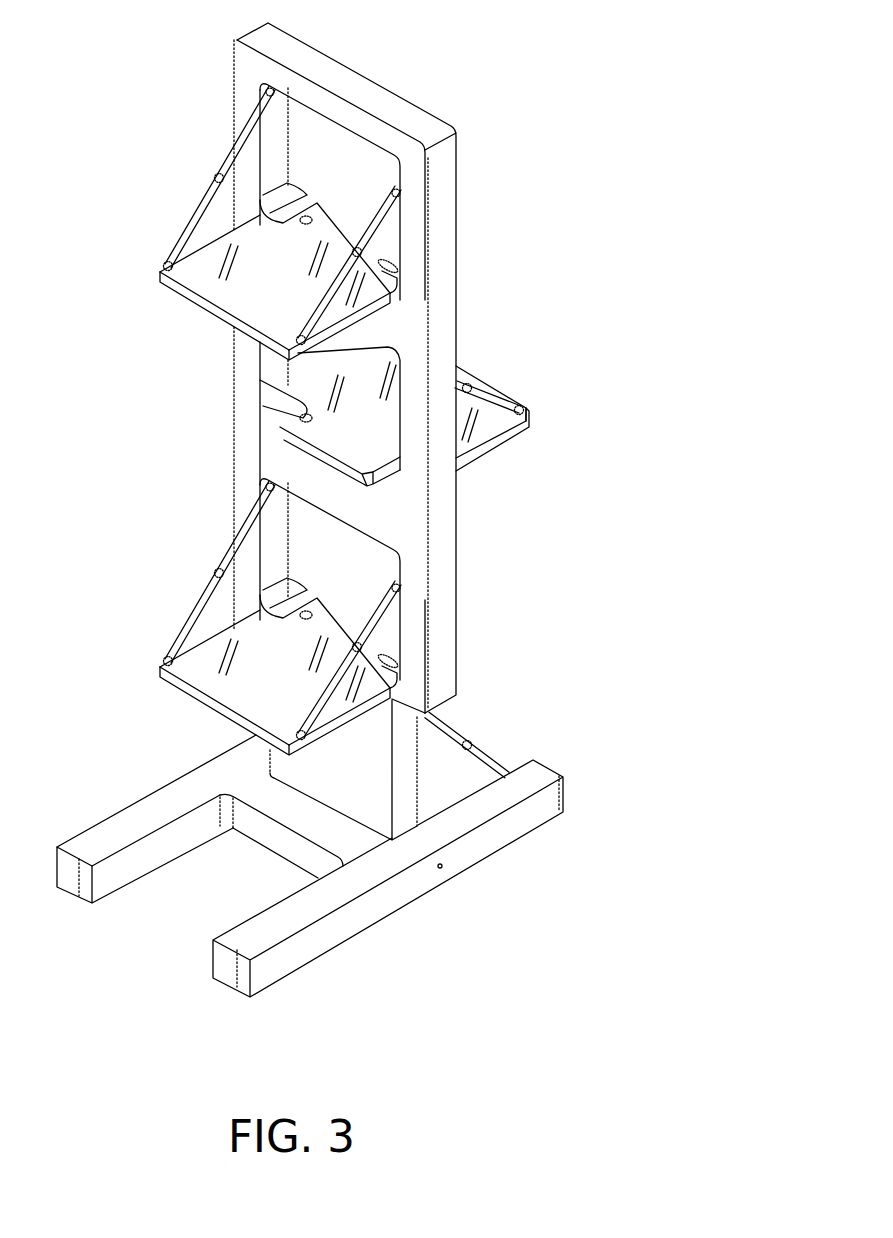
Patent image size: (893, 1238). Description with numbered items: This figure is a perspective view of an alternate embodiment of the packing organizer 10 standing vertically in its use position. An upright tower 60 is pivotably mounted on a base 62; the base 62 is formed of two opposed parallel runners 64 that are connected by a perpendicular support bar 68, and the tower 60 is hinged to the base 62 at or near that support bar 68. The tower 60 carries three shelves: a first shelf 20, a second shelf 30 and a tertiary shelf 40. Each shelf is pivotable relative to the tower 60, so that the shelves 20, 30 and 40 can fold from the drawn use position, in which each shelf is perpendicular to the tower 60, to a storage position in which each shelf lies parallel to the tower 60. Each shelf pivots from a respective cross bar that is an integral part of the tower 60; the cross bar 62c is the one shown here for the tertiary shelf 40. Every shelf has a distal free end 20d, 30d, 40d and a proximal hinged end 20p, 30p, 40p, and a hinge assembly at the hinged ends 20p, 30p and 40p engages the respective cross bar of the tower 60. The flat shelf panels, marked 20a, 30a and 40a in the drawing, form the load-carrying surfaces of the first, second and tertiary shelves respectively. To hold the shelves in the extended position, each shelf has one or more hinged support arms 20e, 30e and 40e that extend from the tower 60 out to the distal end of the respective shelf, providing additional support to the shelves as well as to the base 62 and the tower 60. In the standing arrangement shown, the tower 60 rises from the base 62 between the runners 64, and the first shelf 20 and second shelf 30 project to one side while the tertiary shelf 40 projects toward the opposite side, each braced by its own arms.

The display stand assembly 10 is at (547, 75).
The tower 60 is at (462, 278).
The base 62 is at (424, 902).
The cross bar 62c is at (489, 752).
The runners 64 is at (114, 890).
The support bar 68 is at (247, 837).
The first shelf 20 is at (253, 660).
The lower shelf plate 20a is at (297, 707).
The distal free end 20d is at (210, 703).
The hinged support arms 20e is at (193, 614).
The proximal hinged end 20p is at (337, 618).
The second shelf 30 is at (316, 217).
The upper shelf plate 30a is at (292, 300).
The distal free end 30d is at (210, 308).
The hinged support arms 30e is at (190, 227).
The proximal hinged end 30p is at (370, 214).
The tertiary shelf 40 is at (380, 409).
The rear shelf plate 40a is at (385, 441).
The distal free end 40d is at (516, 407).
The hinged support arms 40e is at (490, 397).
The proximal hinged end 40p is at (304, 422).